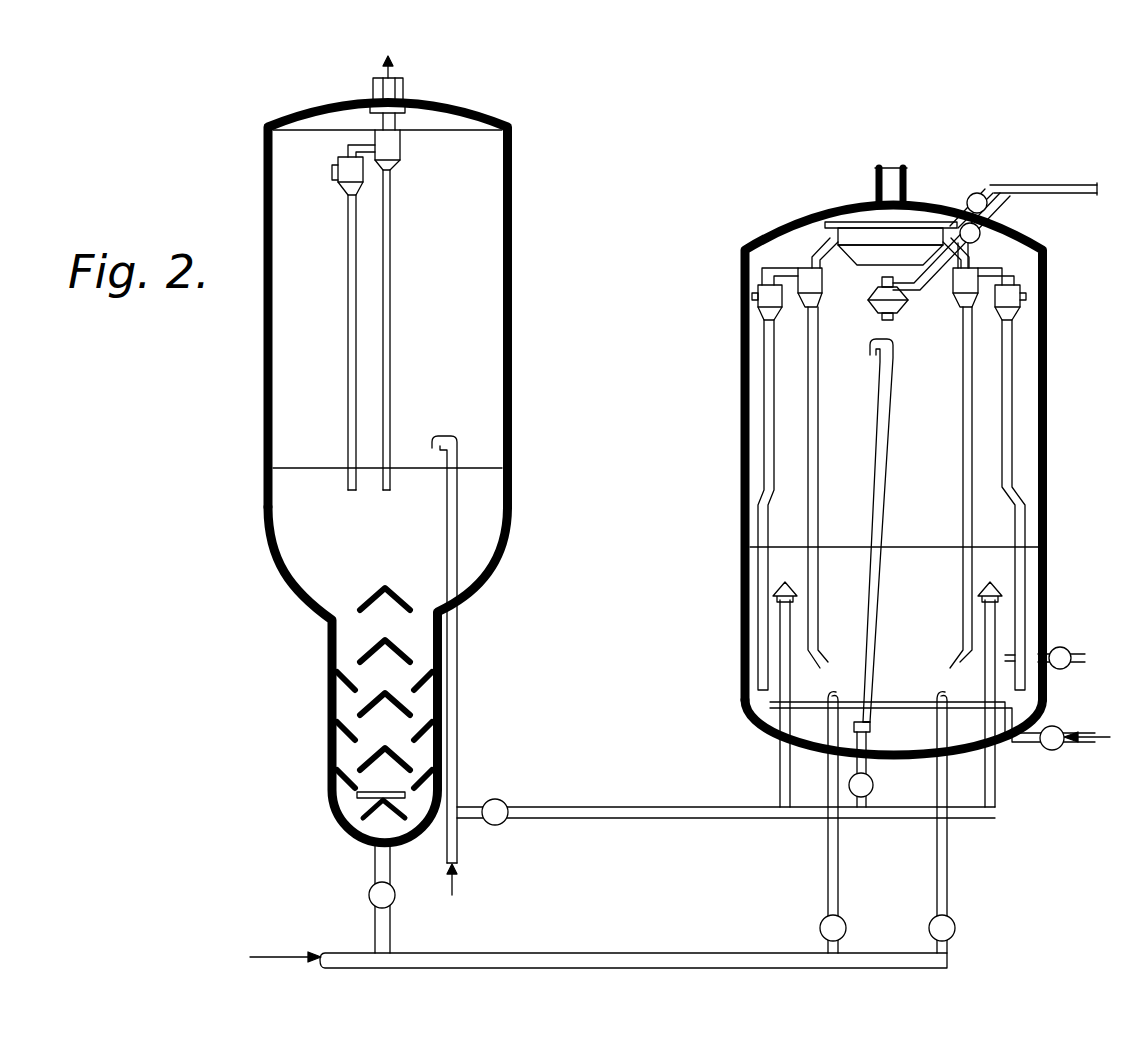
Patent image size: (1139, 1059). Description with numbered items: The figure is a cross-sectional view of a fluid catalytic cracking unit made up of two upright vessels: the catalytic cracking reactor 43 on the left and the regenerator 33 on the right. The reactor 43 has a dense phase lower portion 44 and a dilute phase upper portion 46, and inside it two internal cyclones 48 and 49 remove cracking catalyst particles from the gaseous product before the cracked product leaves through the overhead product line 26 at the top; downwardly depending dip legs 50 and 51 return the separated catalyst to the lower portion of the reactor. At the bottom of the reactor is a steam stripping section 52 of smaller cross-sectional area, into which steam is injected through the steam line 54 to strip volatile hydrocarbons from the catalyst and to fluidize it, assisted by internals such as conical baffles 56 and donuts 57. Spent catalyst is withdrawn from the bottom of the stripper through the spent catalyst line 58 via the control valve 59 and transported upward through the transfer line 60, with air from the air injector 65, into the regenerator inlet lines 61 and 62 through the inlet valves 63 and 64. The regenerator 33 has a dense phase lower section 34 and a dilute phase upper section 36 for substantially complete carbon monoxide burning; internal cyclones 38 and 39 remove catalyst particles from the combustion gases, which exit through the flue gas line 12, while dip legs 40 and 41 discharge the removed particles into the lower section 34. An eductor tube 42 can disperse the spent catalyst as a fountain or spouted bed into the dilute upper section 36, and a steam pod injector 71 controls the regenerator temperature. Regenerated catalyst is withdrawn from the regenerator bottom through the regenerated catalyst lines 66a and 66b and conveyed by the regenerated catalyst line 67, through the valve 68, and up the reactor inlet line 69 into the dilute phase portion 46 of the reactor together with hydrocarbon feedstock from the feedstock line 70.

The flue gas line 12 is at (875, 186).
The overhead product line 26 is at (404, 92).
The regenerator 33 is at (1047, 394).
The dense phase lower section 34 is at (899, 546).
The dilute phase upper section 36 is at (940, 405).
The internal cyclone 38 is at (762, 300).
The internal cyclone 39 is at (822, 293).
The dip leg 40 is at (757, 456).
The dip leg 41 is at (819, 446).
The eductor tube 42 is at (884, 466).
The catalytic cracking reactor 43 is at (513, 280).
The dense phase lower portion 44 is at (332, 466).
The dilute phase upper portion 46 is at (320, 306).
The internal cyclone 48 is at (347, 192).
The internal cyclone 49 is at (398, 160).
The dip leg 50 is at (346, 376).
The dip leg 51 is at (391, 344).
The steam stripping section 52 is at (327, 684).
The steam line 54 is at (352, 795).
The conical baffles 56 is at (378, 594).
The donuts 57 is at (340, 740).
The spent catalyst line 58 is at (372, 852).
The control valve 59 is at (368, 893).
The transfer line 60 is at (672, 952).
The regenerator inlet line 61 is at (827, 858).
The regenerator inlet line 62 is at (949, 868).
The inlet valve 63 is at (820, 926).
The inlet valve 64 is at (956, 928).
The air injector 65 is at (342, 952).
The regenerated catalyst line 66a is at (997, 780).
The regenerated catalyst line 66b is at (778, 768).
The regenerated catalyst line 67 is at (628, 806).
The valve 68 is at (505, 798).
The reactor inlet line 69 is at (459, 661).
The feedstock line 70 is at (460, 851).
The steam pod injector 71 is at (908, 300).